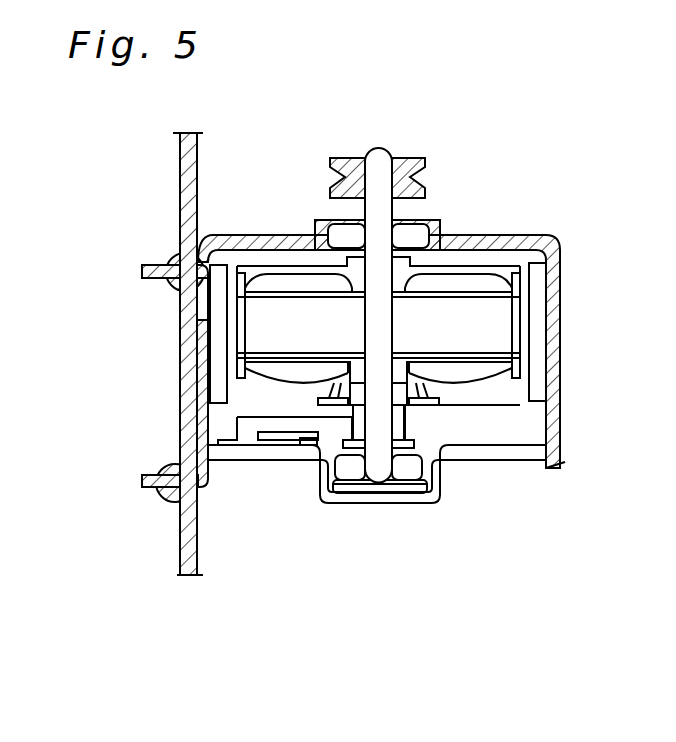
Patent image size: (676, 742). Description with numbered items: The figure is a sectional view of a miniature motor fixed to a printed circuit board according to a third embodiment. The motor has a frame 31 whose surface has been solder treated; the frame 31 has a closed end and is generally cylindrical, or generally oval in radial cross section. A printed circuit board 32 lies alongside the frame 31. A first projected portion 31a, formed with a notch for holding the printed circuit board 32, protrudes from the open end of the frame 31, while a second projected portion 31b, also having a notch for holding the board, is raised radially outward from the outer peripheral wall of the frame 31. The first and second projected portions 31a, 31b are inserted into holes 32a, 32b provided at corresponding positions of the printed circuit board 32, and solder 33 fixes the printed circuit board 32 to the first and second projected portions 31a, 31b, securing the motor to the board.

The frame 31 is at (264, 232).
The first projected portion 31a is at (153, 488).
The second projected portion 31b is at (150, 273).
The printed circuit board 32 is at (178, 181).
The hole 32a is at (184, 489).
The hole 32b is at (190, 295).
The solder 33 is at (174, 258).